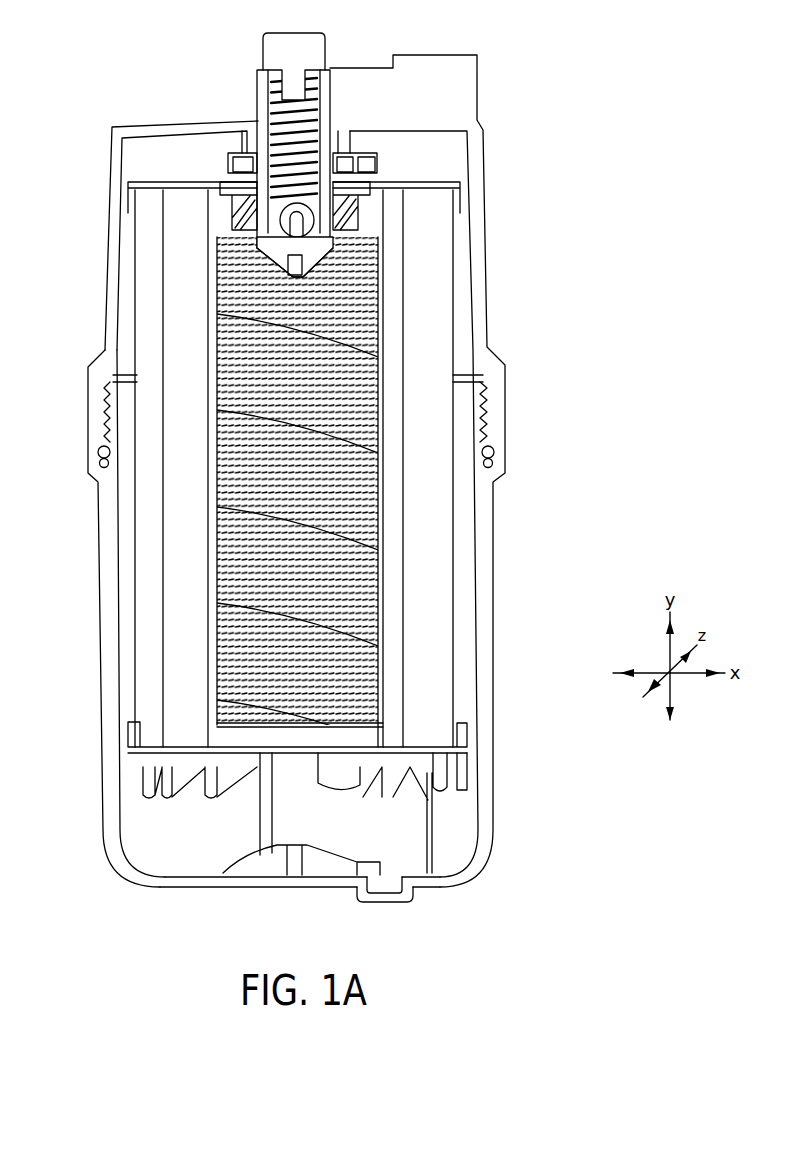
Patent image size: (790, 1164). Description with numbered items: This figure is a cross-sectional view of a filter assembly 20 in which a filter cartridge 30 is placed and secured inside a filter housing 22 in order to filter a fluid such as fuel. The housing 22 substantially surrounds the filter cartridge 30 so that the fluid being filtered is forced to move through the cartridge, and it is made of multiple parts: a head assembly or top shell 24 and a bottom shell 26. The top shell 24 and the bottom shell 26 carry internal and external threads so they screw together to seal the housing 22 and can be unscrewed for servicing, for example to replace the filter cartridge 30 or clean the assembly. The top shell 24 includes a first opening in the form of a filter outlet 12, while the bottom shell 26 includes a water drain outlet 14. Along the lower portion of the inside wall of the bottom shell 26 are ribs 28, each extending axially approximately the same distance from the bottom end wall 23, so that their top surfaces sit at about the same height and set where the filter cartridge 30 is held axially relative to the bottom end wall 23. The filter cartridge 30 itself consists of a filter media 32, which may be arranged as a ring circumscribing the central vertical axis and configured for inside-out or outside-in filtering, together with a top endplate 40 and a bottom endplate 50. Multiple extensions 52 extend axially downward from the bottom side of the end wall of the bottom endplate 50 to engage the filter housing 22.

The filter outlet 12 is at (325, 103).
The water drain outlet 14 is at (393, 897).
The filter assembly 20 is at (572, 166).
The filter housing 22 is at (488, 246).
The bottom end wall 23 is at (218, 887).
The top shell 24 is at (103, 289).
The bottom shell 26 is at (100, 607).
The rib 28 is at (459, 781).
The filter cartridge 30 is at (460, 542).
The filter media 32 is at (435, 340).
The top endplate 40 is at (442, 180).
The bottom endplate 50 is at (443, 732).
The extension 52 is at (147, 790).